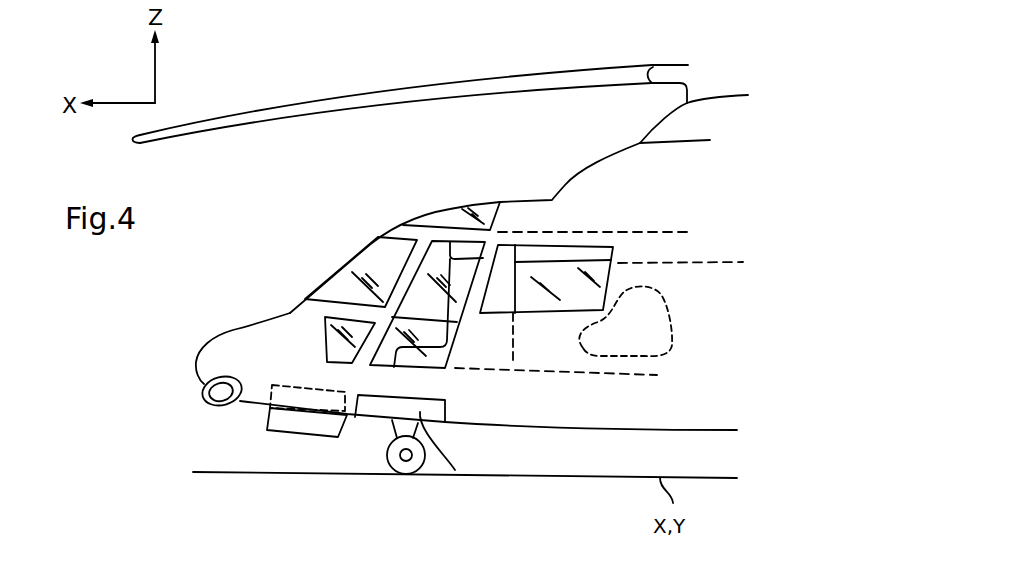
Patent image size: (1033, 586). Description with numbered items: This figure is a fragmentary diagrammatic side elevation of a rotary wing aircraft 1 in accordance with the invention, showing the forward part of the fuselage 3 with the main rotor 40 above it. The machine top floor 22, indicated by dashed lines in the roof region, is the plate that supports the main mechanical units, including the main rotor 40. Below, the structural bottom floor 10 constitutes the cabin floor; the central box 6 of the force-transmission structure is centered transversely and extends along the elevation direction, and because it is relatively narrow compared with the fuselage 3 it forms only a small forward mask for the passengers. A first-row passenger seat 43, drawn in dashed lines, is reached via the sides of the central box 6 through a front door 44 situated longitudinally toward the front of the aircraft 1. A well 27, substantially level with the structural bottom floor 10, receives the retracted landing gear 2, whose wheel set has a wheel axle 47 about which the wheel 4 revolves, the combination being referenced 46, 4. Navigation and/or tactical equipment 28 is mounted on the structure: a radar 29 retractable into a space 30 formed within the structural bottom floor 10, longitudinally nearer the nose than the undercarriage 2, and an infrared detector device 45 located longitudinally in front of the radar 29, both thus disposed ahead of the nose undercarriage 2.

The rotary wing aircraft 1 is at (178, 377).
The landing gear 2 is at (405, 485).
The fuselage 3 is at (233, 331).
The wheel 4 is at (406, 455).
The box 6 is at (497, 337).
The structural bottom floor 10 is at (435, 387).
The machine top floor 22 is at (677, 248).
The well 27 is at (455, 470).
The navigation and/or tactical equipment 28 is at (208, 453).
The radar 29 is at (285, 425).
The space 30 is at (287, 395).
The main rotor 40 is at (644, 98).
The passenger seat 43 is at (660, 337).
The front door 44 is at (428, 265).
The infrared detector device 45 is at (218, 394).
The wheel 46 is at (380, 497).
The wheel axle 47 is at (397, 456).